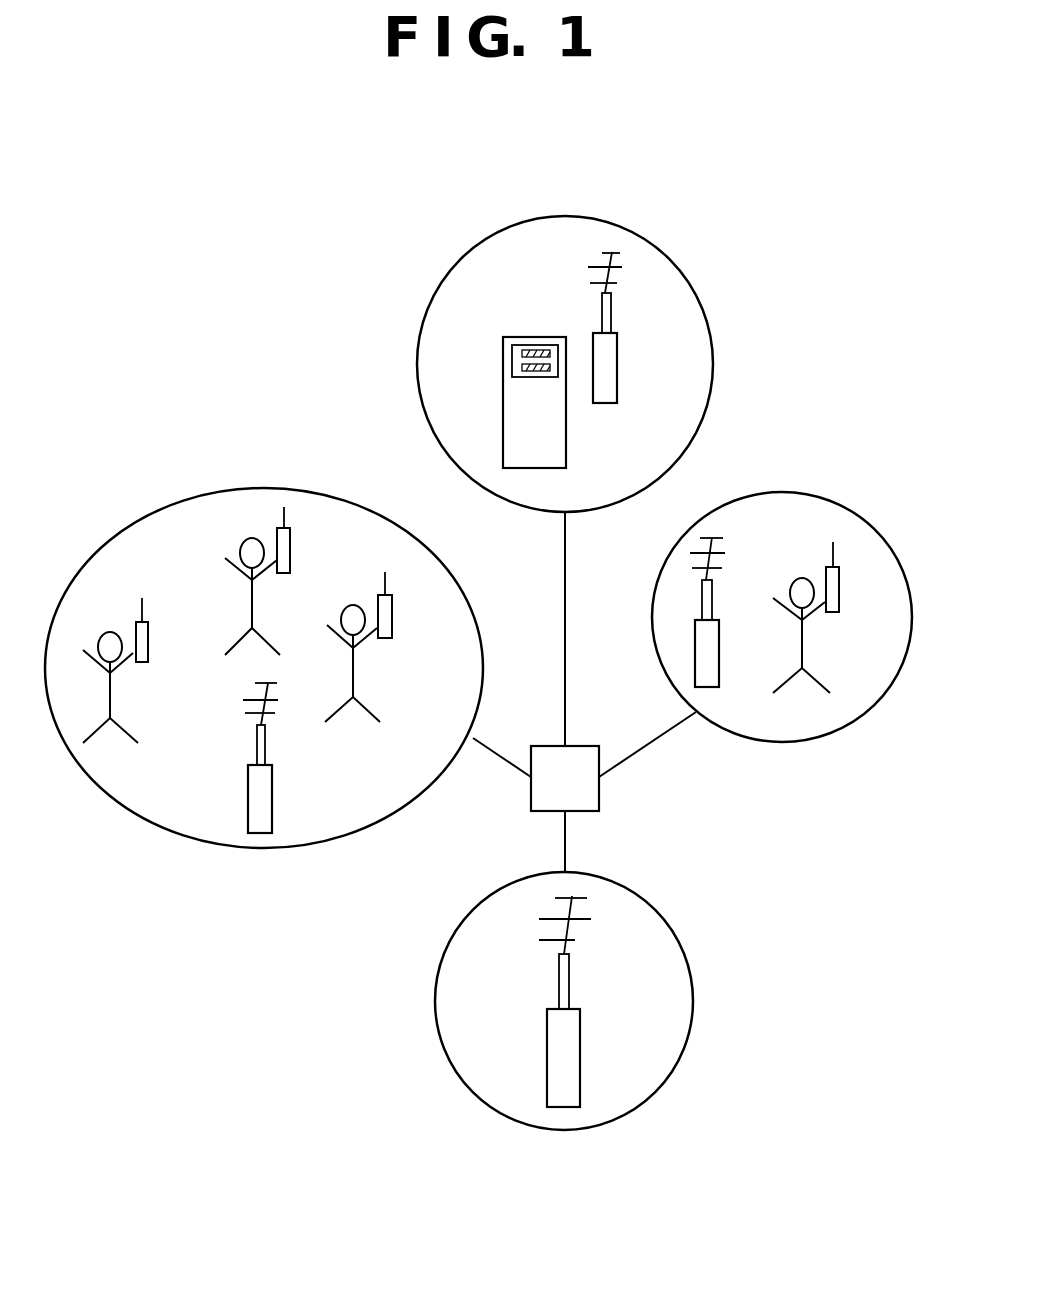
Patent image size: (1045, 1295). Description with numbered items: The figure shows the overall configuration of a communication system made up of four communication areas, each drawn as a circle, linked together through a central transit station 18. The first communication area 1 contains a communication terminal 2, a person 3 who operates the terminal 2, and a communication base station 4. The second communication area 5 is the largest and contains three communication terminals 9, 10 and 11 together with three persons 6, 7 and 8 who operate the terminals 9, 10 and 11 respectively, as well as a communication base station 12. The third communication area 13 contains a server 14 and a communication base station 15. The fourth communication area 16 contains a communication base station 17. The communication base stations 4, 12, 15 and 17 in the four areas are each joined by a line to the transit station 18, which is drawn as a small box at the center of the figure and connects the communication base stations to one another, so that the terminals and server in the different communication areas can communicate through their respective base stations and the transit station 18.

The first communication area 1 is at (776, 492).
The communication terminal 2 is at (839, 588).
The person 3 is at (804, 645).
The communication base station 4 is at (719, 649).
The second communication area 5 is at (258, 488).
The person 6 is at (254, 604).
The person 7 is at (355, 668).
The person 8 is at (112, 692).
The communication terminal 9 is at (290, 550).
The communication terminal 10 is at (392, 615).
The communication terminal 11 is at (148, 644).
The communication base station 12 is at (272, 793).
The third communication area 13 is at (565, 217).
The server 14 is at (503, 387).
The communication base station 15 is at (617, 367).
The fourth communication area 16 is at (563, 1130).
The communication base station 17 is at (580, 1050).
The transit station 18 is at (599, 800).